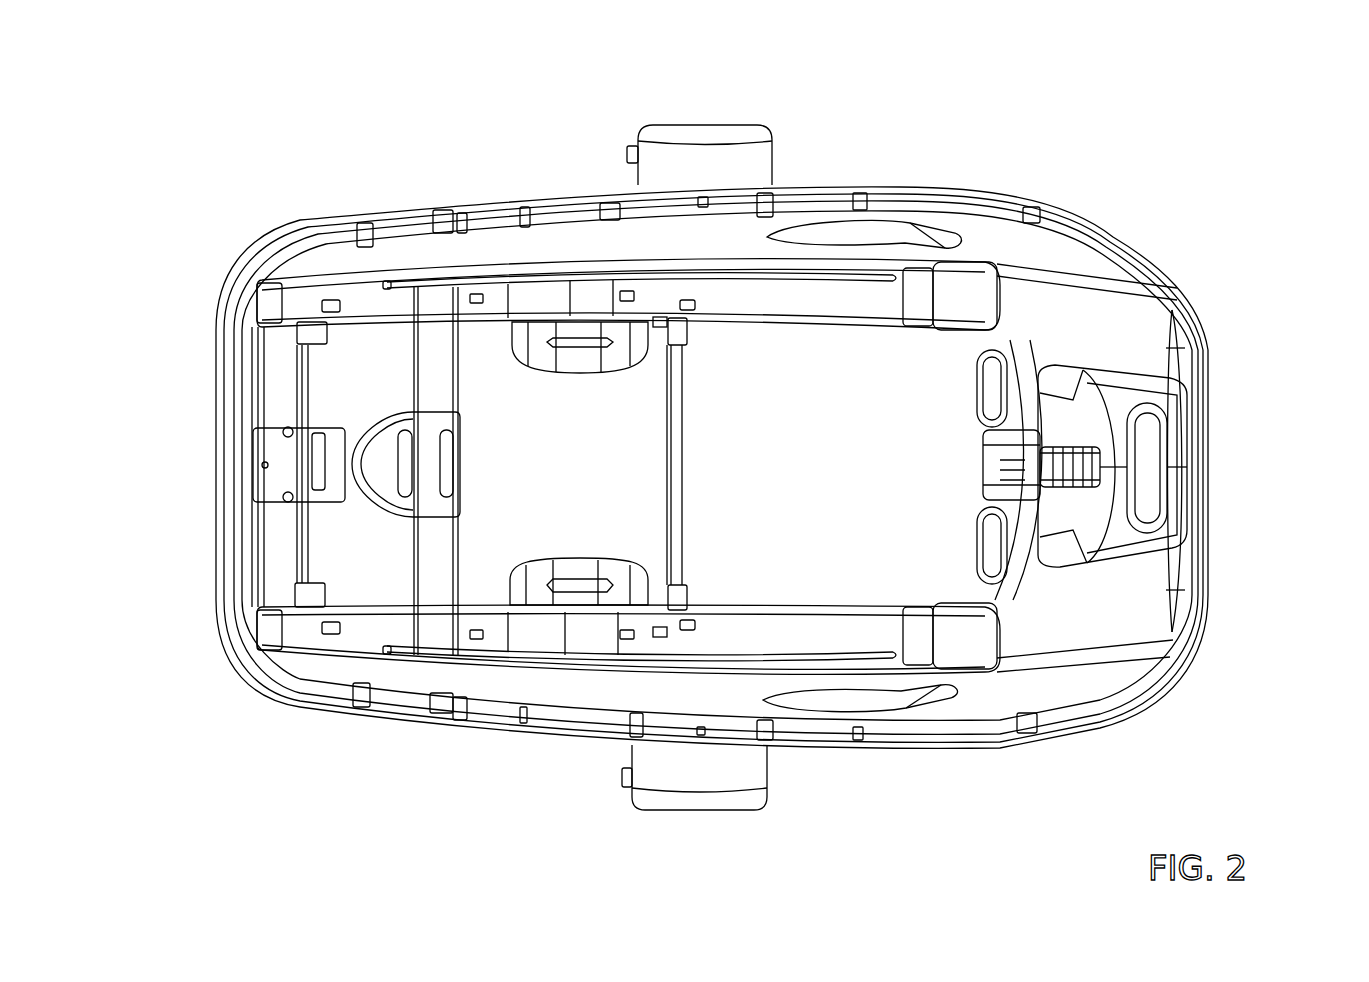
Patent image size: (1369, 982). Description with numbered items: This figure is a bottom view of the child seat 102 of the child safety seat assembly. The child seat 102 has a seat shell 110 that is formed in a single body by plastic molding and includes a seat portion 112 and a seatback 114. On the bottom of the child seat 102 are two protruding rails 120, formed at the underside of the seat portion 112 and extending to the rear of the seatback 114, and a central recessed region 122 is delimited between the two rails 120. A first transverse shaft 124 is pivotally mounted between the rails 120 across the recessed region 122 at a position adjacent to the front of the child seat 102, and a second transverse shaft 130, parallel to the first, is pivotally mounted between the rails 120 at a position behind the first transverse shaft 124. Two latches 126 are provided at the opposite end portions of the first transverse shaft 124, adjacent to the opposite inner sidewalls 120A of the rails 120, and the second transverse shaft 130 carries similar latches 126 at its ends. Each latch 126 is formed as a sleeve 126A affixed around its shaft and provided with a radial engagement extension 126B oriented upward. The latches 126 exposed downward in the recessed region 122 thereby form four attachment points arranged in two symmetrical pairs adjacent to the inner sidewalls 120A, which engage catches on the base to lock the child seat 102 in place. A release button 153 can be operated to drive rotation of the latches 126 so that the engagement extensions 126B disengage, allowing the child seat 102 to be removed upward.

The child seat 102 is at (1240, 103).
The seat shell 110 is at (987, 710).
The seat portion 112 is at (400, 253).
The seatback 114 is at (993, 220).
The rails 120 is at (518, 258).
The inner sidewalls 120A is at (880, 343).
The central recessed region 122 is at (745, 350).
The first transverse shaft 124 is at (303, 523).
The latches 126 is at (627, 292).
The sleeve 126A is at (305, 336).
The radial engagement extension 126B is at (318, 302).
The second transverse shaft 130 is at (675, 470).
The release button 153 is at (1193, 455).